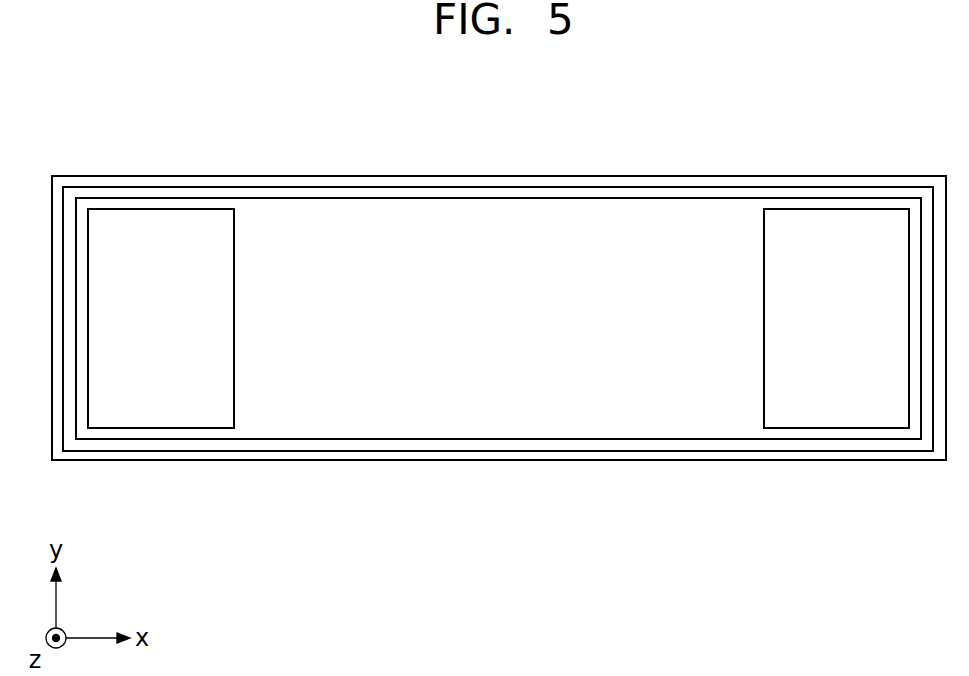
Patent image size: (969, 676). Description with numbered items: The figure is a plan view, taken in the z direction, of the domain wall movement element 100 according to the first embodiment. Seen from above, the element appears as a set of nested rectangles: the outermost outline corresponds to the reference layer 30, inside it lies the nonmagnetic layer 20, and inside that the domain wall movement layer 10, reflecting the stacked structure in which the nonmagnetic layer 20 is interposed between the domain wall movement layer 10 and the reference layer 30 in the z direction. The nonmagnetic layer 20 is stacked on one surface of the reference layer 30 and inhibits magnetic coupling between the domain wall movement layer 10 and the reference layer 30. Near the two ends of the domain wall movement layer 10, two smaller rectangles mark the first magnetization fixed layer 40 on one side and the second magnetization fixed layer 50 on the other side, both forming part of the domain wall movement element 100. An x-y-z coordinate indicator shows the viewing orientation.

The domain wall movement element 100 is at (499, 296).
The domain wall movement layer 10 is at (437, 420).
The nonmagnetic layer 20 is at (507, 442).
The reference layer 30 is at (576, 452).
The first magnetization fixed layer 40 is at (164, 409).
The second magnetization fixed layer 50 is at (840, 407).